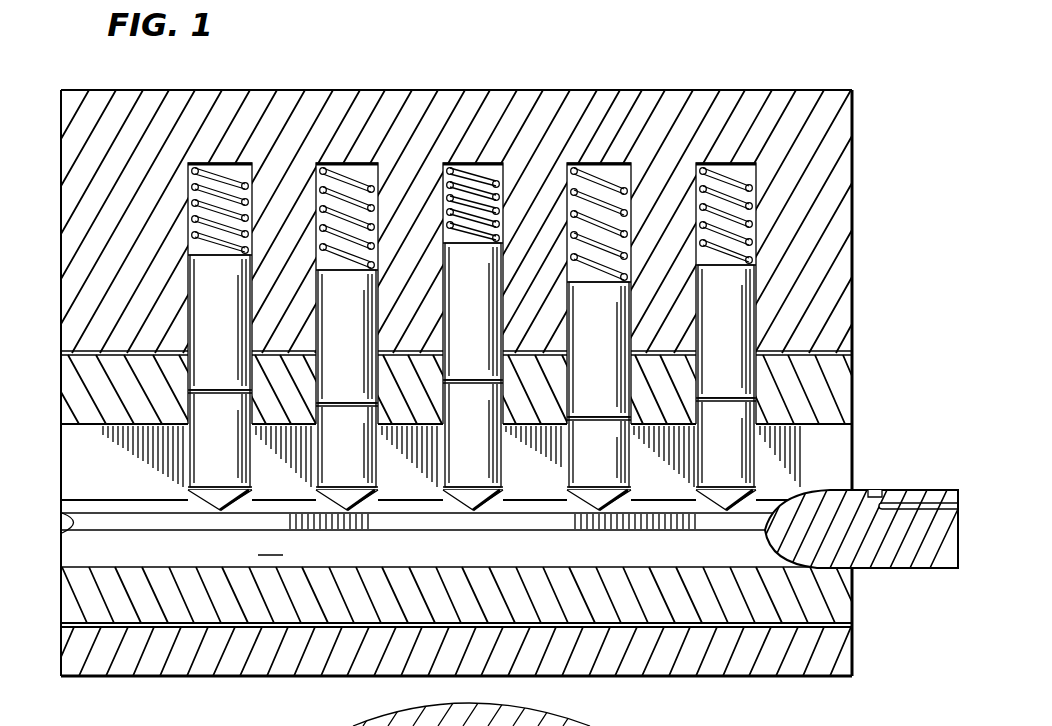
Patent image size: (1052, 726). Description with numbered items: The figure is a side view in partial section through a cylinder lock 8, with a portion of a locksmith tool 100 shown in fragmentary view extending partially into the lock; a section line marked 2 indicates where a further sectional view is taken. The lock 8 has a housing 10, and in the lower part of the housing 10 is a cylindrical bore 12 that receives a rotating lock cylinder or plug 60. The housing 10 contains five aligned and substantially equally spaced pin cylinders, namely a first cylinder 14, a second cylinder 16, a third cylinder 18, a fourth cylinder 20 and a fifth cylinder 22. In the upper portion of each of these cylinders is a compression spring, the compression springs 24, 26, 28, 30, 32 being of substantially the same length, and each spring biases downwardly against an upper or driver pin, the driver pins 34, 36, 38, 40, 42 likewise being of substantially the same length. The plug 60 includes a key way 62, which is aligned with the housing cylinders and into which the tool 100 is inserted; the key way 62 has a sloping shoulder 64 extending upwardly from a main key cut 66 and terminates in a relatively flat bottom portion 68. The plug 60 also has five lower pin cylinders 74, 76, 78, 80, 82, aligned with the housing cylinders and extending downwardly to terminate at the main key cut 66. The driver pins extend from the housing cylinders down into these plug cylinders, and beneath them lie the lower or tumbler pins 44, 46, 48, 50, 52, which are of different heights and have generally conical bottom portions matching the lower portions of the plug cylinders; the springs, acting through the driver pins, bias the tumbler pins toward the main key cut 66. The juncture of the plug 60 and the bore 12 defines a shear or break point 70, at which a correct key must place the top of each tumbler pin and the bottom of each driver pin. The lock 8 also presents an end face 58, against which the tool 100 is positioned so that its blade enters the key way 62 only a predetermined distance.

The section line 2- 2 is at (695, 62).
The cylinder lock 8 is at (867, 110).
The housing 10 is at (72, 188).
The cylindrical bore 12 is at (82, 622).
The first cylinder 14 is at (752, 192).
The second cylinder 16 is at (626, 192).
The third cylinder 18 is at (497, 190).
The fourth cylinder 20 is at (372, 190).
The fifth cylinder 22 is at (243, 188).
The compression spring 24 is at (755, 225).
The compression spring 26 is at (630, 246).
The compression spring 28 is at (502, 222).
The compression spring 30 is at (377, 245).
The compression spring 32 is at (249, 224).
The driver pin 34 is at (753, 305).
The driver pin 36 is at (628, 305).
The driver pin 38 is at (500, 303).
The driver pin 40 is at (373, 305).
The driver pin 42 is at (247, 305).
The tumbler pin 44 is at (755, 457).
The tumbler pin 46 is at (630, 457).
The tumbler pin 48 is at (504, 455).
The tumbler pin 50 is at (379, 452).
The tumbler pin 52 is at (252, 452).
The end face 58 is at (850, 268).
The rotating lock cylinder or plug 60 is at (840, 398).
The key way 62 is at (843, 467).
The sloping shoulder 64 is at (67, 503).
The main key cut 66 is at (67, 537).
The flat bottom portion 68 is at (82, 567).
The shear or break point 70 is at (852, 367).
The cylinder 74 is at (758, 390).
The cylinder 76 is at (632, 397).
The cylinder 78 is at (505, 402).
The cylinder 80 is at (378, 400).
The cylinder 82 is at (250, 397).
The locksmith tool 100 is at (902, 477).